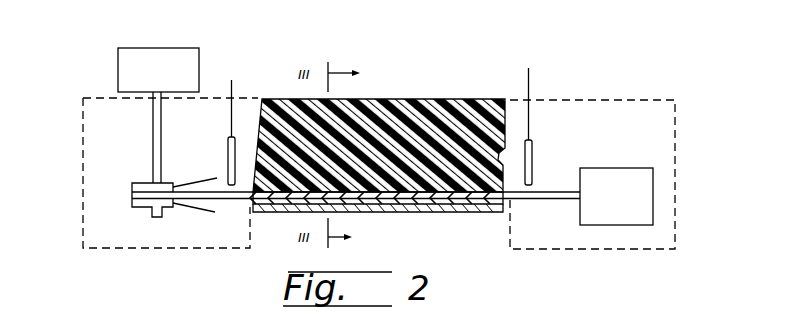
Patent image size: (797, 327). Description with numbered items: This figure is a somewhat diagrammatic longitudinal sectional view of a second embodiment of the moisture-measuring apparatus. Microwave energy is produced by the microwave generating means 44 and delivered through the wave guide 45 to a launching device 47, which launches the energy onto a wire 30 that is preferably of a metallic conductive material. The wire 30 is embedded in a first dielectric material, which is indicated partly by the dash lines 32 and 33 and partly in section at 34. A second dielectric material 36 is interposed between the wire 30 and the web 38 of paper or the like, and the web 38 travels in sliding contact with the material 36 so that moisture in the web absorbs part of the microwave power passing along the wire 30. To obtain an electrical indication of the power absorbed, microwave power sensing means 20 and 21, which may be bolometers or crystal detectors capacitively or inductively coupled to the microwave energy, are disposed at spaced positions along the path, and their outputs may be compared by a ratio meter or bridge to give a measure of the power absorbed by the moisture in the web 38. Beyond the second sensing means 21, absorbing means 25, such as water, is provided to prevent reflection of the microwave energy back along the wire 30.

The microwave generating means 44 is at (158, 48).
The wave guide 45 is at (150, 134).
The launching device 47 is at (184, 212).
The microwave power sensing means 20 is at (228, 157).
The microwave power sensing means 21 is at (533, 160).
The first dielectric material 34 is at (425, 99).
The second dielectric material 36 is at (275, 212).
The web 38 is at (392, 213).
The wire 30 is at (447, 213).
The first dielectric material 32 is at (82, 192).
The first dielectric material 33 is at (578, 100).
The absorbing means 25 is at (657, 210).